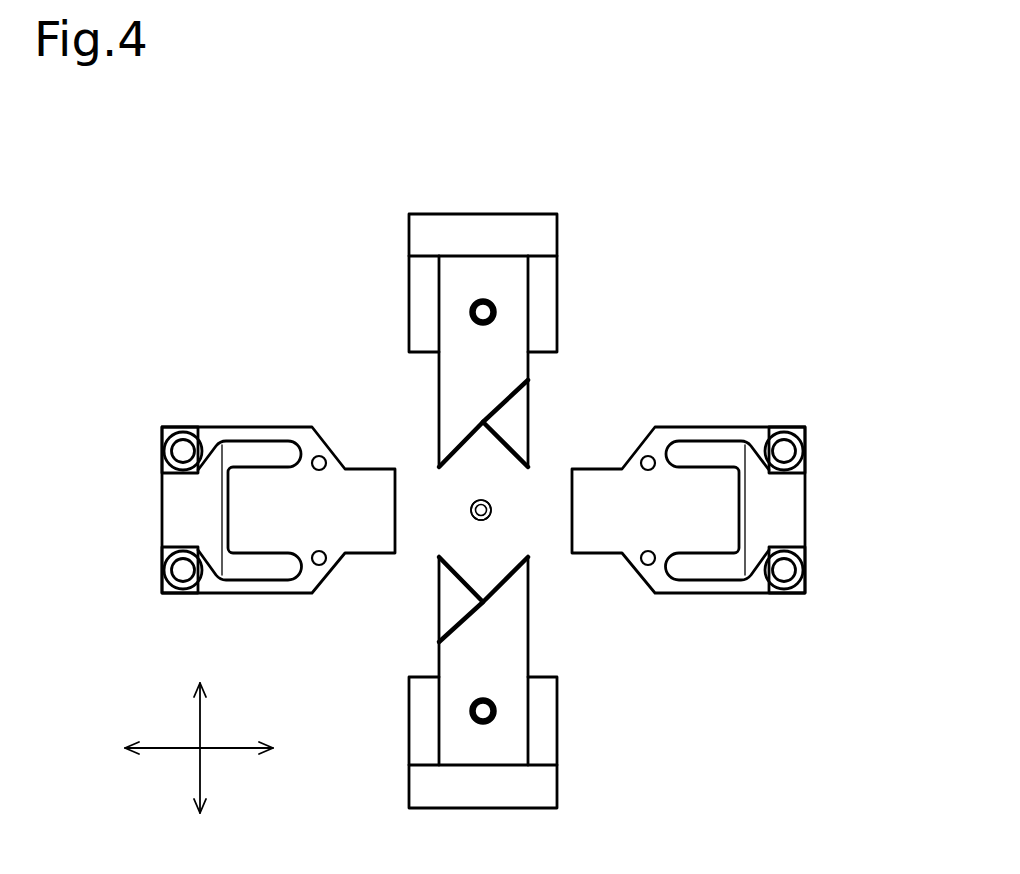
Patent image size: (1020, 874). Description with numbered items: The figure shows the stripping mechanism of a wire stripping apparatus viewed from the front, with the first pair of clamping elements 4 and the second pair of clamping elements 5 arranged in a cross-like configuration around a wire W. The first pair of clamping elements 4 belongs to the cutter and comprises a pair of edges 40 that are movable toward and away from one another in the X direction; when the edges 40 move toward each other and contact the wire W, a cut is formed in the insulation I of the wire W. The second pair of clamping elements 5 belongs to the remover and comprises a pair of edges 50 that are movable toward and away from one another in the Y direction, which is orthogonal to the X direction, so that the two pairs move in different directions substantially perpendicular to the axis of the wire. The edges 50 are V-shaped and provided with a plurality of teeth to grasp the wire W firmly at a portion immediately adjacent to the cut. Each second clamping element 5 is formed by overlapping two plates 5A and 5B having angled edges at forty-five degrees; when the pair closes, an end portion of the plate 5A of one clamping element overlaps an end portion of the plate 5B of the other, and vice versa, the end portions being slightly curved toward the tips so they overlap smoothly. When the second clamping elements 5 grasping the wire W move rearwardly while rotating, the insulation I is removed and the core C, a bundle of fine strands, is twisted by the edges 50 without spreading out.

The first pair of clamping elements 4 is at (285, 519).
The second pair of clamping elements 5 is at (490, 377).
The plate 5A is at (453, 422).
The plate 5B is at (513, 427).
The edges 40 is at (396, 509).
The edges 50 is at (480, 443).
The wire W is at (471, 509).
The core C is at (486, 519).
The insulation I is at (492, 508).
The X direction X is at (186, 752).
The Y direction Y is at (200, 733).